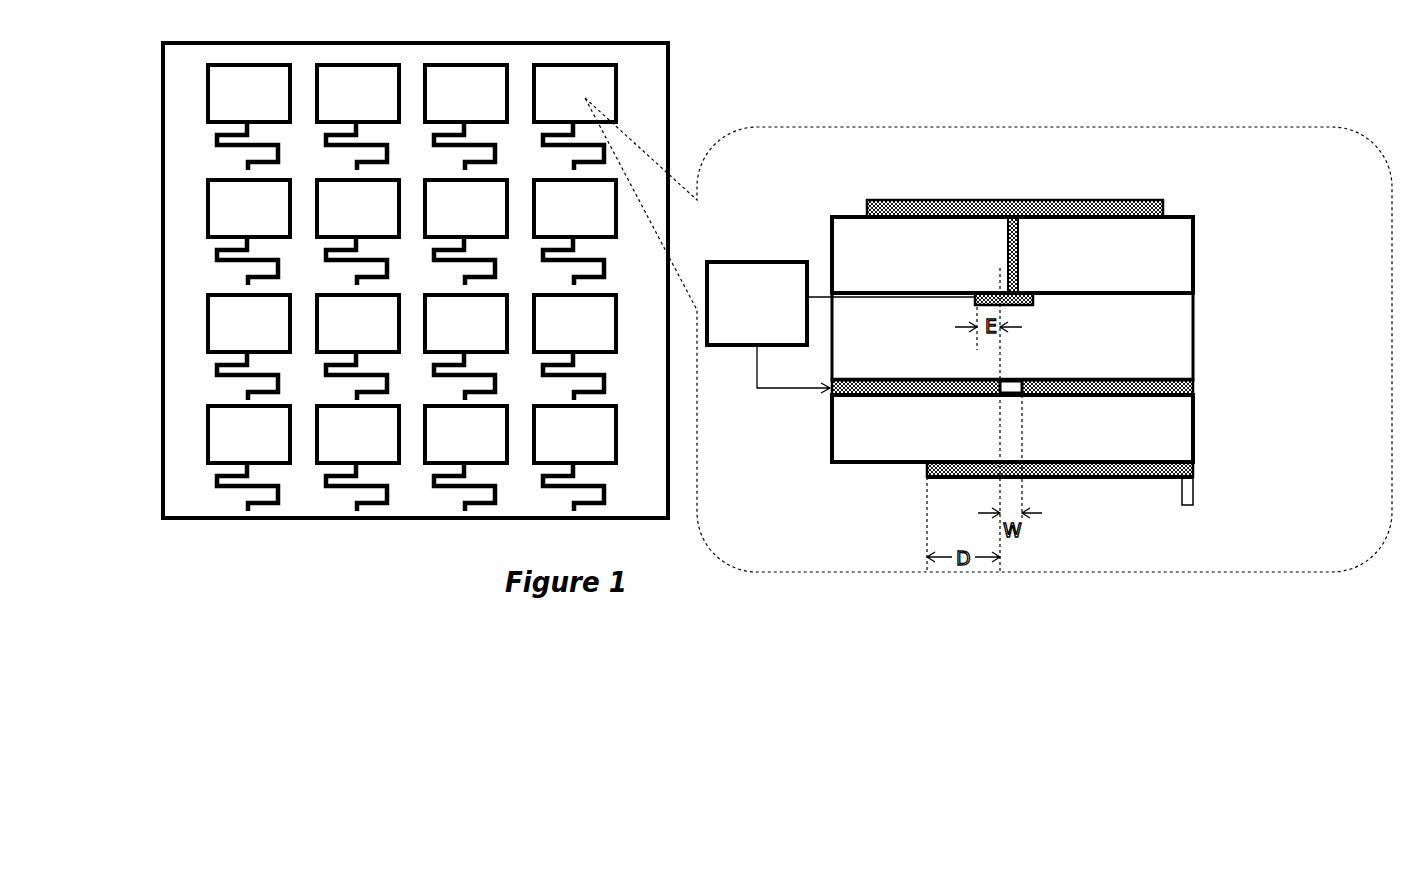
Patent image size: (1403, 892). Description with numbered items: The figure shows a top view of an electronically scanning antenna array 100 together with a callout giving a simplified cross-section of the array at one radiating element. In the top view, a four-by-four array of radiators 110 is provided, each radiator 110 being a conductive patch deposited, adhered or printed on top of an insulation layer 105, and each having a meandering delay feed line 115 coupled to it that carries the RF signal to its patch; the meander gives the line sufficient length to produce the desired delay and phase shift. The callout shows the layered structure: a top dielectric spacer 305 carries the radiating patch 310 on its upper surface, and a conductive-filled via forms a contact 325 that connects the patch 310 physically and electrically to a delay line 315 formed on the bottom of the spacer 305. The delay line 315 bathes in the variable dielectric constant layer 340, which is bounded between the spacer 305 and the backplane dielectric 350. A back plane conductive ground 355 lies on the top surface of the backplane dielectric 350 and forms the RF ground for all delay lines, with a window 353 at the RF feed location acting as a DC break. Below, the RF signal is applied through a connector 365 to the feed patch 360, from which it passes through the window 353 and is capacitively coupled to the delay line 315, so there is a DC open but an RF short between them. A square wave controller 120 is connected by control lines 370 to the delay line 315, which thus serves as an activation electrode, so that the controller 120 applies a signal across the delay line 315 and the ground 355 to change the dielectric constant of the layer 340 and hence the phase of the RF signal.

The antenna array 100 is at (142, 106).
The insulation layer 105 is at (182, 179).
The radiator 110 is at (270, 105).
The delay feed line 115 is at (214, 249).
The square wave controller 120 is at (775, 334).
The top dielectric spacer 305 is at (963, 274).
The radiating patch 310 is at (882, 200).
The delay line 315 is at (1028, 306).
The contact 325 is at (1018, 248).
The variable dielectric constant layer 340 is at (943, 354).
The backplane dielectric 350 is at (1130, 452).
The window 353 is at (1012, 396).
The back plane conductive ground 355 is at (1165, 397).
The feed patch 360 is at (1045, 478).
The connector 365 is at (1193, 492).
The control line 370 is at (818, 293).